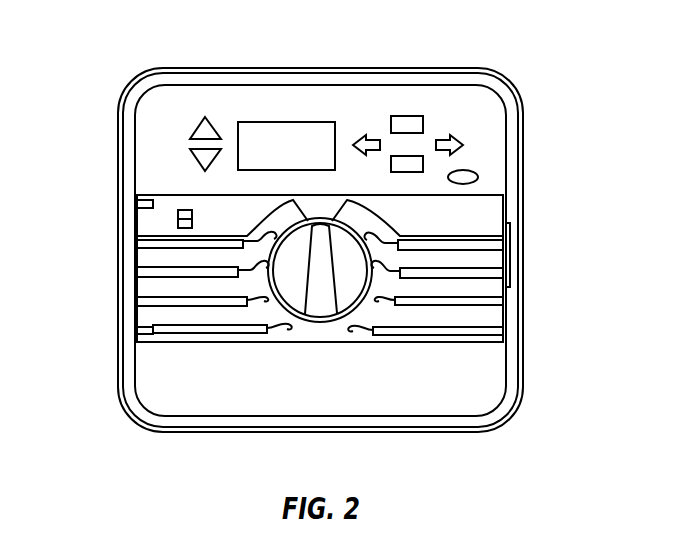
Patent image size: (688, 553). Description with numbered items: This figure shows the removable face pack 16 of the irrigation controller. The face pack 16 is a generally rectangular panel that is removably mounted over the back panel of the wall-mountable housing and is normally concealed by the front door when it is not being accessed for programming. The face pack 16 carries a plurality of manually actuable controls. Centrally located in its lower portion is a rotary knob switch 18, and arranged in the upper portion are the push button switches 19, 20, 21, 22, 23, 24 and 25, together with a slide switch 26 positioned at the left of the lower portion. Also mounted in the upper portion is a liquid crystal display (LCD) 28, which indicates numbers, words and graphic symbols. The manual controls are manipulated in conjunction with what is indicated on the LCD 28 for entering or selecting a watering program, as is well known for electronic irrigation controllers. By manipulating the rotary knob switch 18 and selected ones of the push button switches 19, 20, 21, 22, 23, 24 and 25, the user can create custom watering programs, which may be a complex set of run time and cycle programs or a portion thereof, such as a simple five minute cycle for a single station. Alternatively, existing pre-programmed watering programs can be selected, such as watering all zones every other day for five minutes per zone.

The face pack 16 is at (497, 137).
The rotary knob switch 18 is at (320, 297).
The push button switch 19 is at (363, 137).
The push button switch 20 is at (457, 138).
The push button switch 21 is at (193, 133).
The push button switch 22 is at (193, 152).
The push button switch 23 is at (400, 116).
The push button switch 24 is at (392, 163).
The push button switch 25 is at (479, 177).
The slide switch 26 is at (177, 223).
The liquid crystal display (LCD) 28 is at (262, 132).